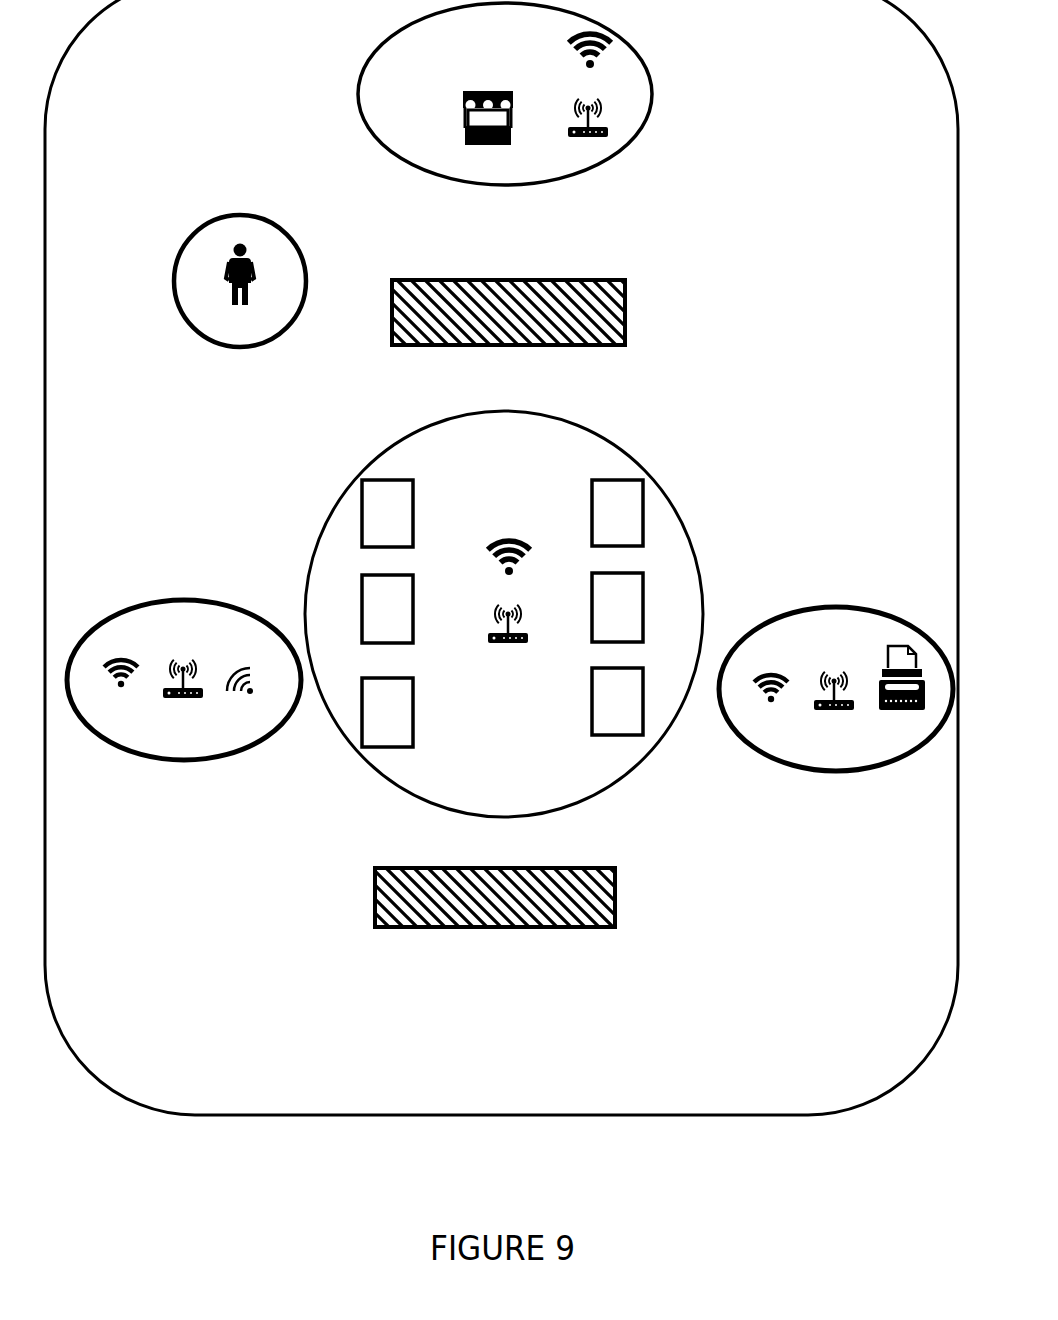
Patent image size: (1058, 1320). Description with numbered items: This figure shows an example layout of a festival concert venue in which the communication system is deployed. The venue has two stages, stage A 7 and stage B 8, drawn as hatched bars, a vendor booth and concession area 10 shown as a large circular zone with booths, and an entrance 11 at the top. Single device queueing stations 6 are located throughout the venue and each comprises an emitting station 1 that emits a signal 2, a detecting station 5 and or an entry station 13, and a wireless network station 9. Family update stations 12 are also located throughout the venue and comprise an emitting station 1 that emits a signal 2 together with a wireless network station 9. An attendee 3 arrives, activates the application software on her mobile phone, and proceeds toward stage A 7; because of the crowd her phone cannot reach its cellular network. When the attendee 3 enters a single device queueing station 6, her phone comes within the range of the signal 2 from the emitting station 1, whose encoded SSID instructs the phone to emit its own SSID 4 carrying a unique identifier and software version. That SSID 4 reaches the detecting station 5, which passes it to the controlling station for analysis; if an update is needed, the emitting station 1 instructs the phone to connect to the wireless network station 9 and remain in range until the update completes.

The emitting station 1 is at (120, 688).
The signal 2 is at (617, 152).
The attendee 3 is at (252, 268).
The SSID 4 is at (306, 278).
The detecting station 5 is at (252, 692).
The single device queueing station 6 is at (176, 626).
The stage A 7 is at (626, 303).
The stage B 8 is at (615, 898).
The wireless network station 9 is at (184, 698).
The vendor booth and concession area 10 is at (510, 688).
The entrance 11 is at (462, 125).
The family update station 12 is at (622, 82).
The entry station 13 is at (902, 711).